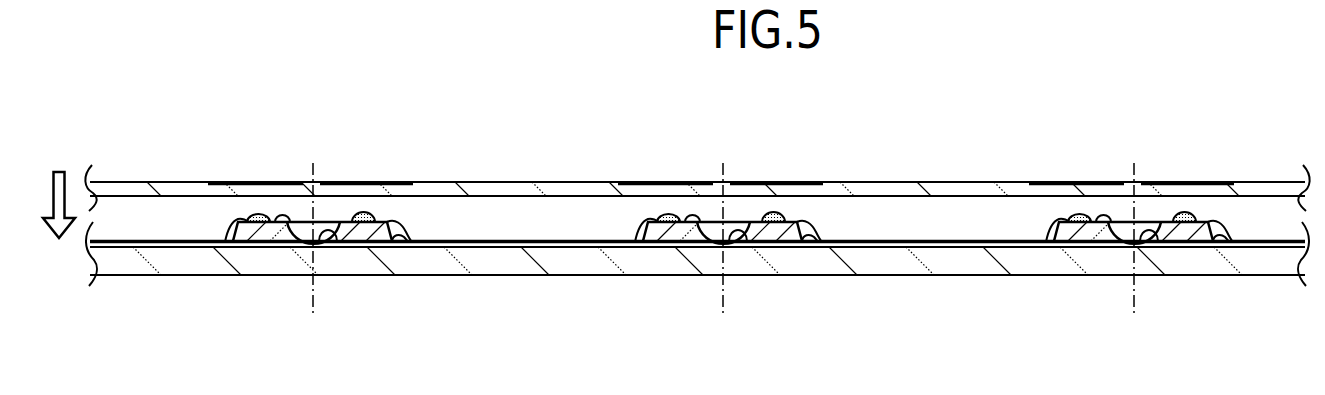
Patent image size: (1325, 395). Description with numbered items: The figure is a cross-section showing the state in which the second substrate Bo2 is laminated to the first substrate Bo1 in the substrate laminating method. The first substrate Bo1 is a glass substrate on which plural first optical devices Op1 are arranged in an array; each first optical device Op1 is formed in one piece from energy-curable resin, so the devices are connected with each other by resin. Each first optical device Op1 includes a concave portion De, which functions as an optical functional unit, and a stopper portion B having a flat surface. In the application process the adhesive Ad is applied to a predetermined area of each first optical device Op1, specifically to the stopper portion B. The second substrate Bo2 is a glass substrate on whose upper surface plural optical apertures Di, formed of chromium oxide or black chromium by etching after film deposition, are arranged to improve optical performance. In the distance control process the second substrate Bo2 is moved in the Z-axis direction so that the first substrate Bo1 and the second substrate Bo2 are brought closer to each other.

The first substrate Bo1 is at (128, 277).
The second substrate Bo2 is at (125, 182).
The optical aperture Di is at (721, 159).
The concave portion De is at (723, 279).
The stopper portion B is at (715, 272).
The adhesive Ad is at (736, 270).
The first optical device Op1 is at (824, 291).